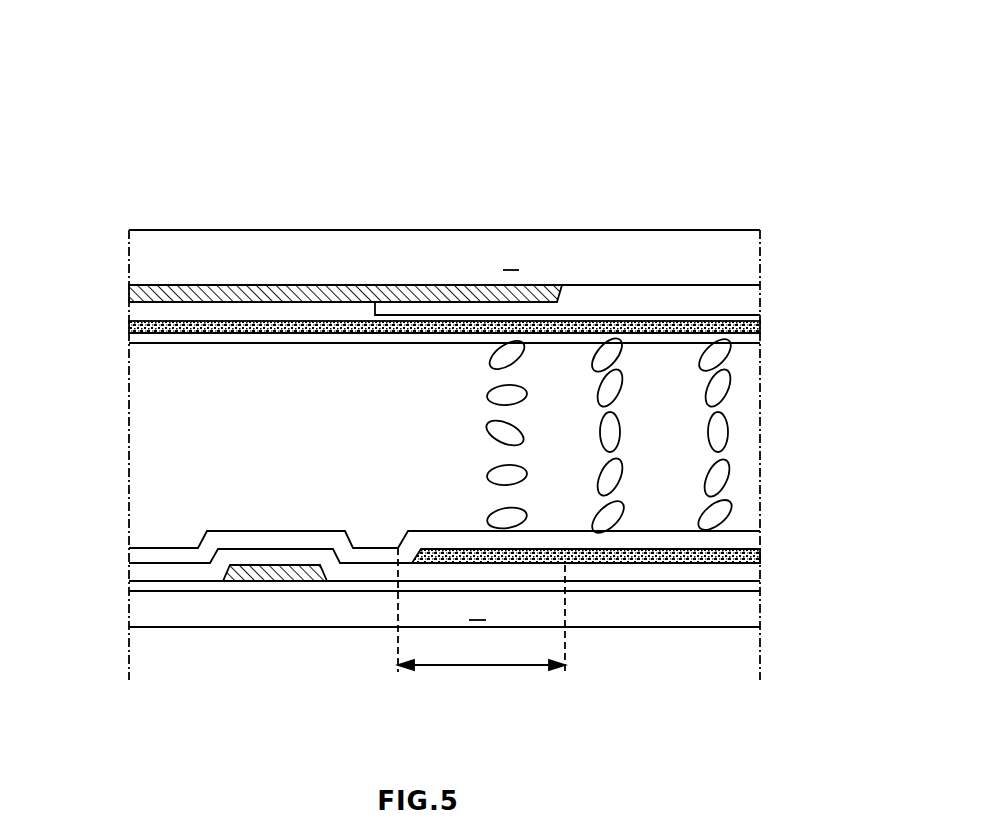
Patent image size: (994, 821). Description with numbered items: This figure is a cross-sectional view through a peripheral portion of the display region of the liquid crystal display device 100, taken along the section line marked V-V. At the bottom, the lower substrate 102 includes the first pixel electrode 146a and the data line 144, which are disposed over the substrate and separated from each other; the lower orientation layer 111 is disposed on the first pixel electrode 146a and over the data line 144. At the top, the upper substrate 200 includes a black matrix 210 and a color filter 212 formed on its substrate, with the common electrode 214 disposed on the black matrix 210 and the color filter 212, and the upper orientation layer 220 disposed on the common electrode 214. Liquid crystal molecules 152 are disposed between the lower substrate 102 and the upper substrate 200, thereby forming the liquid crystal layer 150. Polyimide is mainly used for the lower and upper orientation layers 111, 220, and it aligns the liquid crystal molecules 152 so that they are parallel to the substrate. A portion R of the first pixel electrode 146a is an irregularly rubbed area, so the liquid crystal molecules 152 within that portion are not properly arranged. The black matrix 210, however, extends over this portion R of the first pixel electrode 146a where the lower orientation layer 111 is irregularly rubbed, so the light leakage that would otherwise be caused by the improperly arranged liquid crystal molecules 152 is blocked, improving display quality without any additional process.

The liquid crystal display device 100 is at (680, 148).
The upper substrate 200 is at (113, 230).
The black matrix 210 is at (376, 300).
The color filter 212 is at (610, 293).
The common electrode 214 is at (757, 322).
The upper orientation layer 220 is at (757, 338).
The liquid crystal layer 150 is at (113, 343).
The liquid crystal molecules 152 is at (718, 394).
The lower substrate 102 is at (117, 545).
The lower orientation layer 111 is at (752, 530).
The data line 144 is at (272, 565).
The first pixel electrode 146a is at (753, 557).